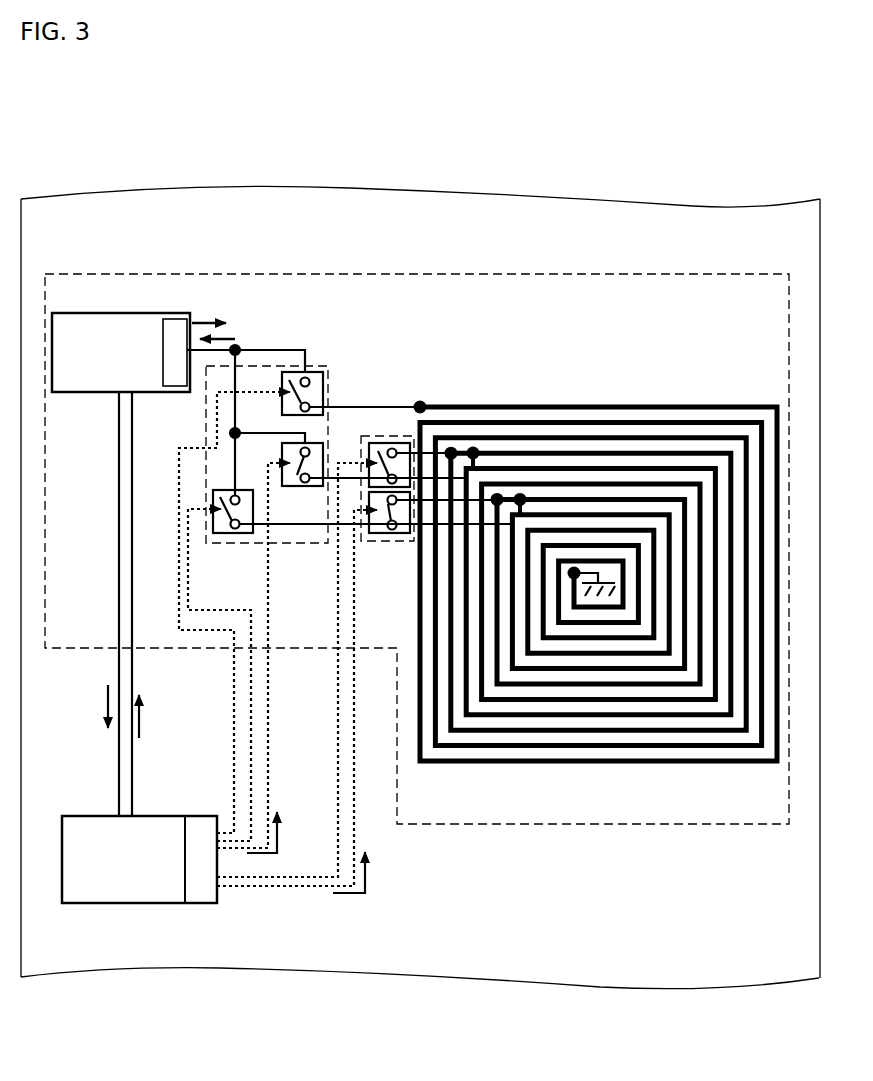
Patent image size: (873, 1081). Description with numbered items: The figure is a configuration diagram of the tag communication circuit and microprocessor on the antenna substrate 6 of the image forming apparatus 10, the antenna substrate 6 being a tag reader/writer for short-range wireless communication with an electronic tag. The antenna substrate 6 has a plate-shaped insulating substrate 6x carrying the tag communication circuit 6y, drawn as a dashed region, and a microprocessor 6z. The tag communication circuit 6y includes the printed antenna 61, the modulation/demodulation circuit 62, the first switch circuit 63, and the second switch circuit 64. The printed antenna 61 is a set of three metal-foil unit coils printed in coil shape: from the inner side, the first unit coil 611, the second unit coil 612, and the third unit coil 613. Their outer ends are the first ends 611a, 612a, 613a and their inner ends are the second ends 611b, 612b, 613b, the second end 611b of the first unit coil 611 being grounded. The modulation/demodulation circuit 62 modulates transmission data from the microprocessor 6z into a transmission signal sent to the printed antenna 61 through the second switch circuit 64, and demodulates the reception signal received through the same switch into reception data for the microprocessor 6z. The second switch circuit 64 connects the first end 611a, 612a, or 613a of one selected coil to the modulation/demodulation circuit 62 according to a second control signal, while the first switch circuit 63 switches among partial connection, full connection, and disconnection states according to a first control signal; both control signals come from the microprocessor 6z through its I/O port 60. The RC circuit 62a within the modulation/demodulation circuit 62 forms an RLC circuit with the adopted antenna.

The image forming apparatus 10 is at (76, 145).
The antenna substrate 6 is at (738, 199).
The substrate 6x is at (820, 960).
The tag communication circuit 6y is at (688, 272).
The microprocessor 6z is at (90, 815).
The I/O port 60 is at (204, 905).
The modulation/demodulation circuit 62 is at (138, 313).
The RC circuit 62a is at (165, 389).
The second switch circuit 64 is at (325, 368).
The first switch circuit 63 is at (377, 548).
The printed antenna 61 is at (634, 398).
The first unit coil 611 is at (602, 668).
The first end of the first unit coil 611a is at (521, 492).
The second end of the first unit coil 611b is at (567, 573).
The second unit coil 612 is at (567, 734).
The first end of the second unit coil 612a is at (474, 446).
The second end of the second unit coil 612b is at (499, 492).
The third unit coil 613 is at (501, 764).
The first end of the third unit coil 613a is at (420, 400).
The second end of the third unit coil 613b is at (451, 446).